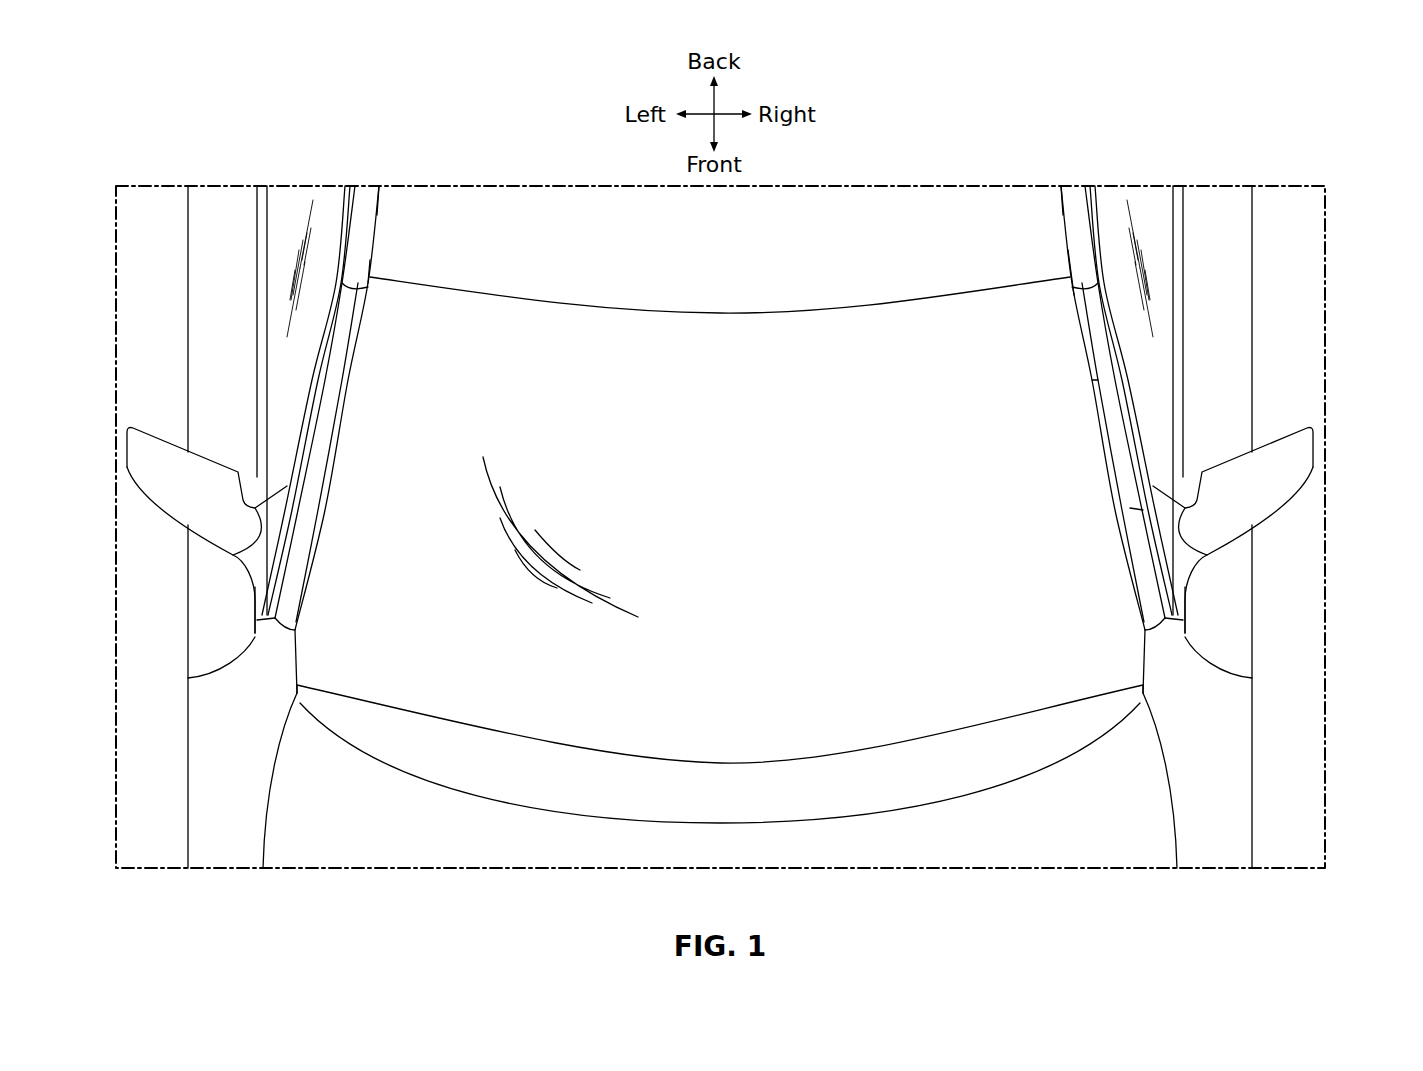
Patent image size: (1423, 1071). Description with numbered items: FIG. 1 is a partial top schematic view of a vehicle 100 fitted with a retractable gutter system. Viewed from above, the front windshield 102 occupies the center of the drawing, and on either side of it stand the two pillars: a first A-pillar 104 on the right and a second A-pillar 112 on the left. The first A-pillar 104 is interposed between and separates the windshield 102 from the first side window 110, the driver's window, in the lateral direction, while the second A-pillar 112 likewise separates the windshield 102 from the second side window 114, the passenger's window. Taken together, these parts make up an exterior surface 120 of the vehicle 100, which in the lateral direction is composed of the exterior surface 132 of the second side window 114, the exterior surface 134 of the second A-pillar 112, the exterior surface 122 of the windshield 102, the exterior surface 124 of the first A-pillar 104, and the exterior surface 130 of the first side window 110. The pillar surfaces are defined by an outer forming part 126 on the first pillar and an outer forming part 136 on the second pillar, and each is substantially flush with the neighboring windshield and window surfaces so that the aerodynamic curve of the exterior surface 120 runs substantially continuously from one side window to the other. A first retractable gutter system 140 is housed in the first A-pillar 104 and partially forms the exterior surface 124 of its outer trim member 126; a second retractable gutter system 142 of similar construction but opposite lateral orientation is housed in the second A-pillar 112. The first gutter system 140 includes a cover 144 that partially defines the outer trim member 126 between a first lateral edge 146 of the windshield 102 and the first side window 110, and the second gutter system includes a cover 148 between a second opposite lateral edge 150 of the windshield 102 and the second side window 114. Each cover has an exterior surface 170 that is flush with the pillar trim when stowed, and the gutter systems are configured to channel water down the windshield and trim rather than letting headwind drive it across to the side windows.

The vehicle 100 is at (1336, 86).
The front windshield 102 is at (758, 343).
The first A-pillar 104 is at (1072, 197).
The first side window 110 is at (1153, 218).
The second A-pillar 112 is at (352, 243).
The second side window 114 is at (300, 290).
The exterior surface of the vehicle 120 is at (1224, 363).
The exterior surface of the windshield 122 is at (603, 343).
The exterior surface of the first A-pillar 124 is at (1070, 213).
The outer forming part 126 is at (1080, 260).
The exterior surface of the first side window 130 is at (1153, 258).
The exterior surface of the second side window 132 is at (297, 203).
The exterior surface of the second A-pillar 134 is at (367, 213).
The outer forming part 136 is at (367, 197).
The first retractable gutter system 140 is at (1140, 543).
The second retractable gutter system 142 is at (308, 523).
The cover 144 is at (1117, 470).
The first lateral edge 146 is at (1082, 346).
The cover 148 is at (327, 417).
The second opposite lateral edge 150 is at (353, 370).
The exterior surface of the cover 170 is at (1130, 508).